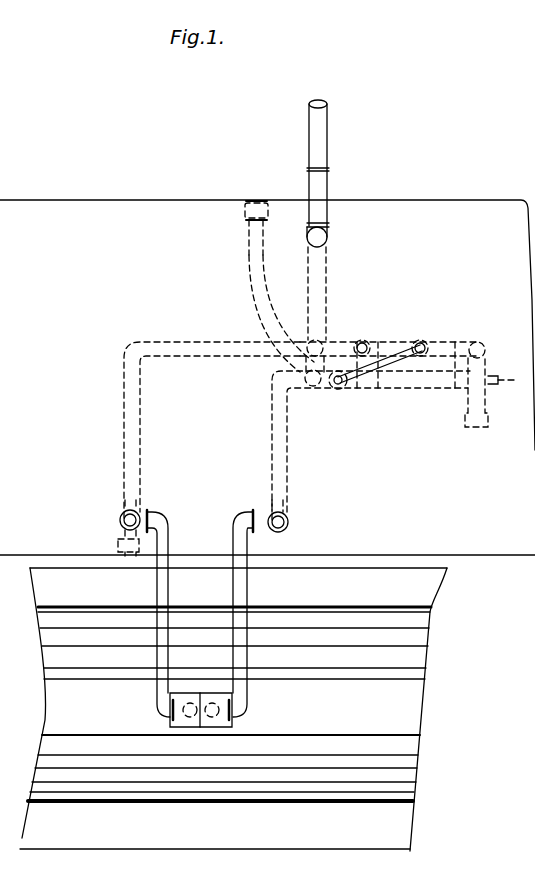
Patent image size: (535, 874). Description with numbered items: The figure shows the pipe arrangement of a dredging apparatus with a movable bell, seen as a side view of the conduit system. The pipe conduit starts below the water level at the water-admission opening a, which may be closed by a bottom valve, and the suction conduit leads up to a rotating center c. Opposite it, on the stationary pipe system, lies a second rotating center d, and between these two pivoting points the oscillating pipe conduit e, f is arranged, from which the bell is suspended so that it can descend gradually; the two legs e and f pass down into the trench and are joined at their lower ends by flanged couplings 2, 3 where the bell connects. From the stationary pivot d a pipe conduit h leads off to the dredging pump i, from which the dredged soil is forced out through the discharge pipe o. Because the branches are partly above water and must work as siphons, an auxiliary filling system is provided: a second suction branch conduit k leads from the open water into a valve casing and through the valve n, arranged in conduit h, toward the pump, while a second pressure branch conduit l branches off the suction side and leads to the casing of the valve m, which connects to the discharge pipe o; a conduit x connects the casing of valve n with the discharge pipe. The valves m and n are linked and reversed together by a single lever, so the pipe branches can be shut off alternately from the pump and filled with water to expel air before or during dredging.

The discharge-pipe o is at (328, 160).
The second separate suction branch conduit k is at (264, 264).
The second separate pressure branch conduit l is at (136, 438).
The pipe-conduit h is at (407, 387).
The conduit x is at (360, 334).
The valve m is at (421, 343).
The valve n is at (339, 392).
The dredging-pump i is at (486, 352).
The rotating center c is at (120, 520).
The water-admission opening a is at (118, 545).
The rotating center d is at (289, 522).
The pipe-conduit e is at (169, 660).
The pipe-conduit f is at (248, 660).
The coupling flange 2 is at (168, 694).
The coupling flange 3 is at (232, 694).